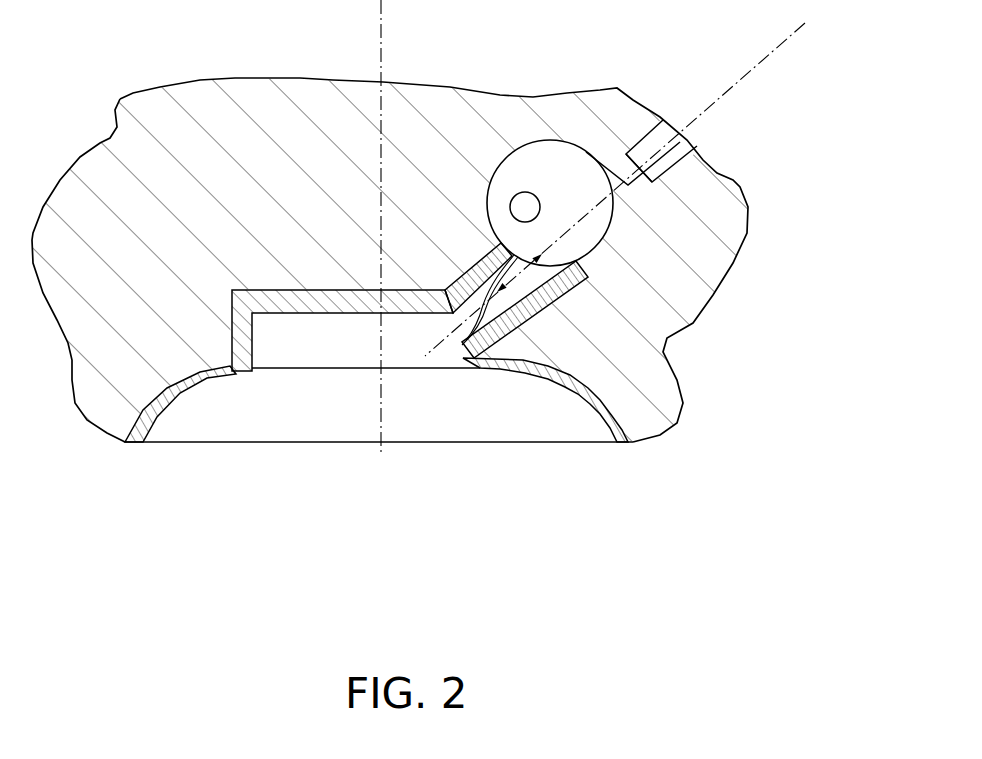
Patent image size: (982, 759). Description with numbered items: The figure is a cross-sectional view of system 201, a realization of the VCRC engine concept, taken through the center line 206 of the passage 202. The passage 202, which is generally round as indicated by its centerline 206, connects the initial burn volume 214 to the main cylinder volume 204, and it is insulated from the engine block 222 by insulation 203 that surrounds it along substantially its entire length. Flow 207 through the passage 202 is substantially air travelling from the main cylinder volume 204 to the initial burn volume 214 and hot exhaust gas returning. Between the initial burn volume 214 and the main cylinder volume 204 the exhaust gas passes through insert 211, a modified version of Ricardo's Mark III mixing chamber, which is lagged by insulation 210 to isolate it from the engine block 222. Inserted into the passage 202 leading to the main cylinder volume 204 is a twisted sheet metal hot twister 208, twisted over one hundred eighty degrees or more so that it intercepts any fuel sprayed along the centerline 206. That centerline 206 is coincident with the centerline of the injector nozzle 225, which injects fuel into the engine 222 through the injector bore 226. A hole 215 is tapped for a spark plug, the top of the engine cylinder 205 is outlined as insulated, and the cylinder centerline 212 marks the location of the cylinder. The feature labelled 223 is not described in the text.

The system 201 is at (712, 437).
The passage 202 is at (463, 303).
The insulation 203 is at (512, 263).
The main cylinder volume (MV) 204 is at (400, 388).
The engine cylinder 205 is at (170, 386).
The center line of passage 206 is at (747, 67).
The flow 207 is at (552, 272).
The hot twister (HT) 208 is at (460, 273).
The insulation 210 is at (277, 296).
The insert (modified Mk III mixing chamber) 211 is at (297, 367).
The cylinder centerline 212 is at (381, 60).
The initial burn volume (IBV) 214 is at (612, 223).
The hole tapped for a spark plug 215 is at (510, 200).
The engine block 222 is at (133, 78).
The junction 223 is at (610, 167).
The injector nozzle 225 is at (642, 137).
The injector bore 226 is at (633, 192).